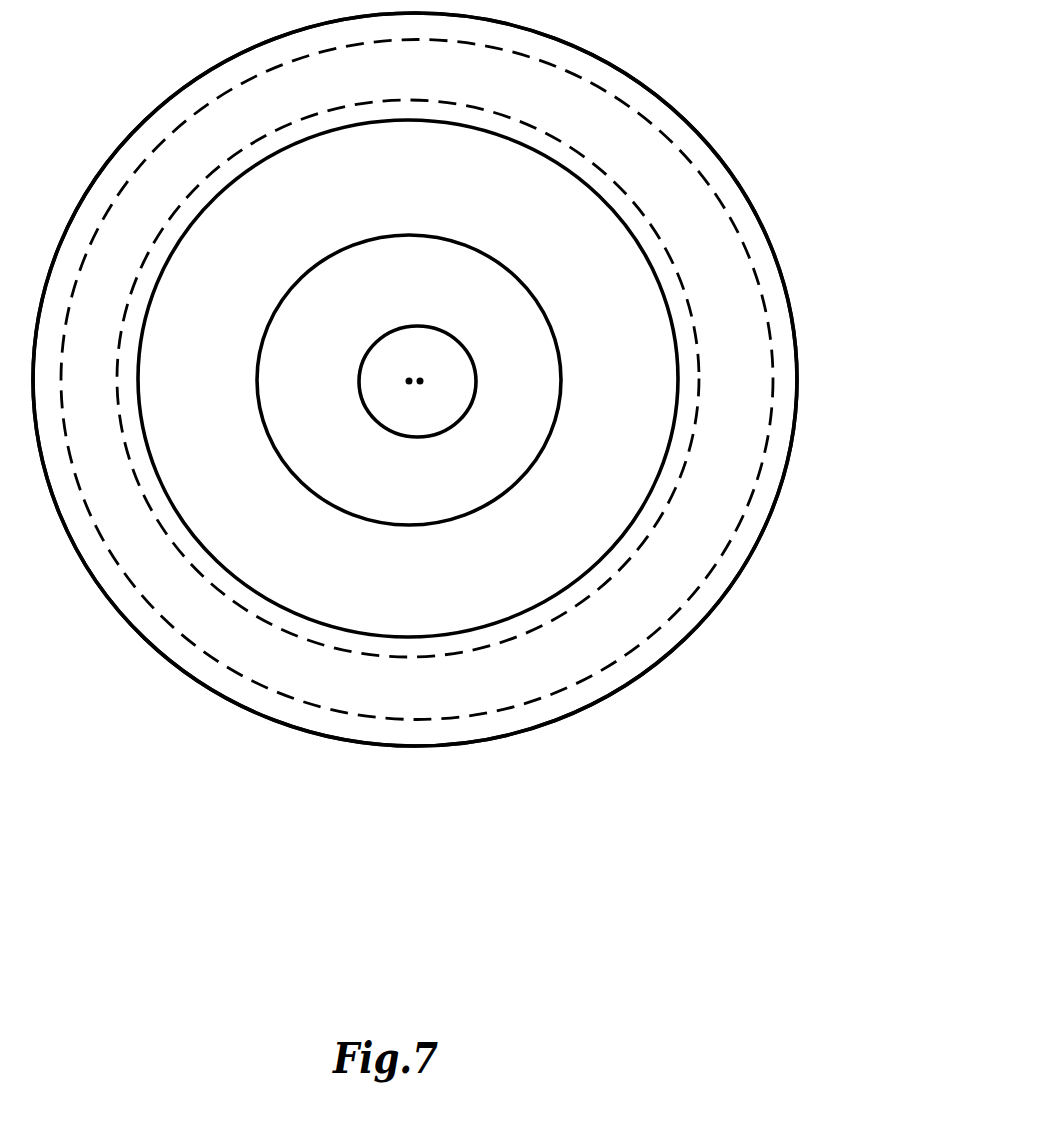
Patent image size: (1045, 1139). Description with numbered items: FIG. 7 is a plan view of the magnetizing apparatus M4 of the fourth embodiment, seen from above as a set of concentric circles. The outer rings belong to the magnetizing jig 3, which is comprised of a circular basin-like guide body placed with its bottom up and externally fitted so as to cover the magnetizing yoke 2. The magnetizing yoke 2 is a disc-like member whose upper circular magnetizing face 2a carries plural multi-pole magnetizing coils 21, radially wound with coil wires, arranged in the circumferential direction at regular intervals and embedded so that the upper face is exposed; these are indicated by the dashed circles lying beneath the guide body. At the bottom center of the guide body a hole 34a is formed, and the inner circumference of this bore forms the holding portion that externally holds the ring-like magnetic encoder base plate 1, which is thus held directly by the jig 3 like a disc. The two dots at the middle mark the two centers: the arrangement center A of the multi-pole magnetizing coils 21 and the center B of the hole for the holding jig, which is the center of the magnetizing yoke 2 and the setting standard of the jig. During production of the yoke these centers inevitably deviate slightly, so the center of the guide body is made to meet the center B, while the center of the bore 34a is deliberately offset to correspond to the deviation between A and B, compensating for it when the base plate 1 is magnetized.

The magnetizing apparatus M4 is at (729, 151).
The magnetizing jig 3 is at (777, 315).
The hole 34a is at (680, 416).
The magnetic encoder base plate 1 is at (620, 493).
The magnetizing yoke 2 is at (703, 582).
The multi-pole magnetizing coil 21 is at (597, 593).
The magnetizing face 2a is at (284, 592).
The arrangement center of the multi-pole magnetizing coil A is at (407, 380).
The center of the hole for the holding jig B is at (421, 378).